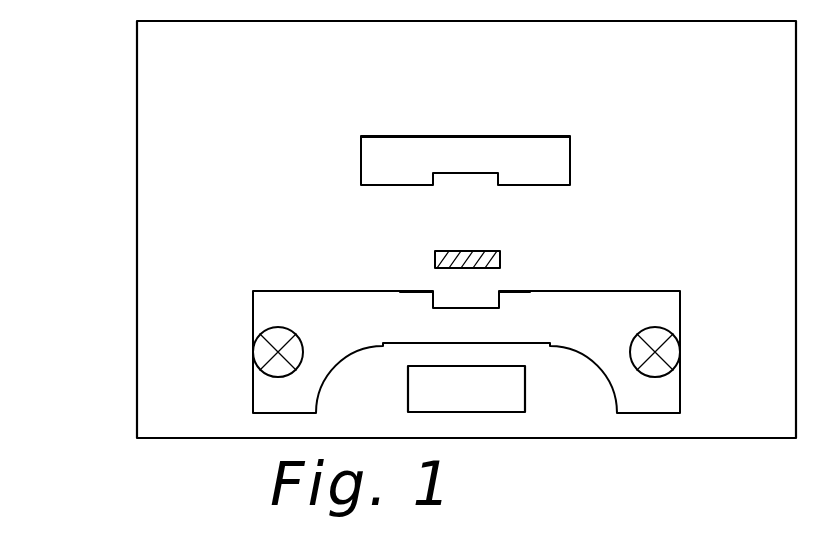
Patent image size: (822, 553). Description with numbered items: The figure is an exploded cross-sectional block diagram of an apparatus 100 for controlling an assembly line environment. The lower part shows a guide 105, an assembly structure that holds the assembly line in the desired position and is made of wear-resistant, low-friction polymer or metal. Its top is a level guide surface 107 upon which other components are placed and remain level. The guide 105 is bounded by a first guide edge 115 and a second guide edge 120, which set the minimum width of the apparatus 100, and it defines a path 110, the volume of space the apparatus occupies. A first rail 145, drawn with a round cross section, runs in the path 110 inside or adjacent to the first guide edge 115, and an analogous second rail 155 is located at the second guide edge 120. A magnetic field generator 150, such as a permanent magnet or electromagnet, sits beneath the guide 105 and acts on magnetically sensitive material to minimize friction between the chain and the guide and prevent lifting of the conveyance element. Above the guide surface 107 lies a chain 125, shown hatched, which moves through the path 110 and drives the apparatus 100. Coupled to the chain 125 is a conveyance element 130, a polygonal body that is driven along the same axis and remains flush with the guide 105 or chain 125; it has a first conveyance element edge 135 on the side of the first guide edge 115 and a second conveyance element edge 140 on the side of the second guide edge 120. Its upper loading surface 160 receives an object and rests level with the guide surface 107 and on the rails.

The apparatus 100 is at (114, 127).
The guide 105 is at (565, 305).
The guide surface 107 is at (400, 290).
The path 110 is at (254, 168).
The first guide edge 115 is at (253, 291).
The second guide edge 120 is at (680, 291).
The chain 125 is at (475, 260).
The conveyance element 130 is at (463, 150).
The first conveyance element edge 135 is at (360, 136).
The second conveyance element edge 140 is at (571, 135).
The first rail 145 is at (267, 355).
The magnetic field generator 150 is at (526, 383).
The second rail 155 is at (668, 353).
The loading surface 160 is at (517, 134).